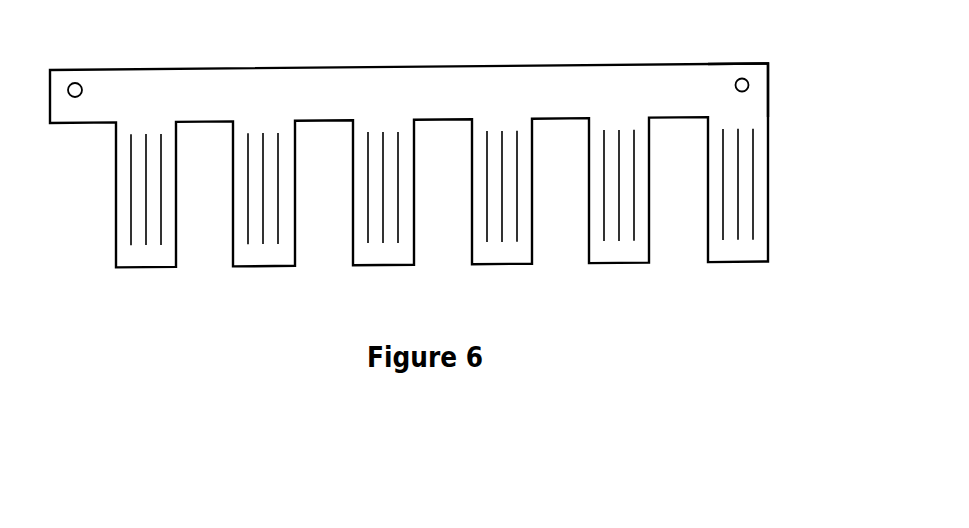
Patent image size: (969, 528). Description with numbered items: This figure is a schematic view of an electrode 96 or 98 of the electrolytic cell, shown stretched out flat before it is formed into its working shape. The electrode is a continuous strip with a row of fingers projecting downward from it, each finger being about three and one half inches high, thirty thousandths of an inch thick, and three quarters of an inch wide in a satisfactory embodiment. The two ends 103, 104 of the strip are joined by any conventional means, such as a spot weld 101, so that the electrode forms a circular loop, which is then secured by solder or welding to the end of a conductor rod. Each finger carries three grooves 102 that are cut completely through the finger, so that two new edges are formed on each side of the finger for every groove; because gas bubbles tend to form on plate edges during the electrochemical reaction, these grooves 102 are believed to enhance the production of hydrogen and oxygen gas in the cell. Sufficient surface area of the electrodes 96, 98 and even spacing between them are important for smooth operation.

The electrode 96 is at (409, 140).
The electrode 98 is at (353, 83).
The spot weld 101 is at (748, 88).
The grooves 102 is at (768, 176).
The end 103 is at (62, 79).
The end 104 is at (758, 80).